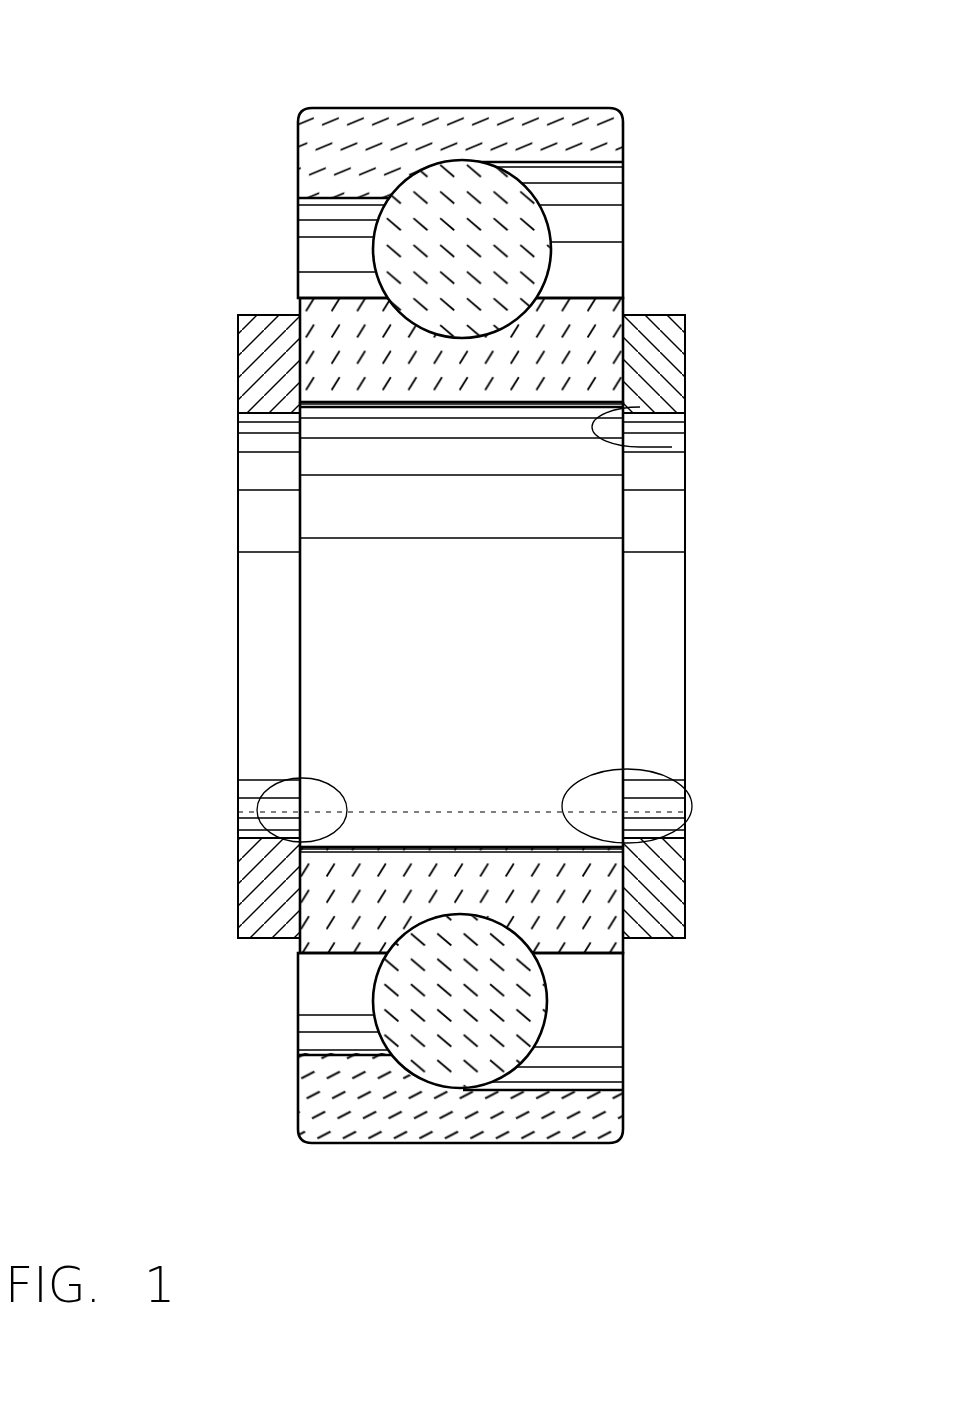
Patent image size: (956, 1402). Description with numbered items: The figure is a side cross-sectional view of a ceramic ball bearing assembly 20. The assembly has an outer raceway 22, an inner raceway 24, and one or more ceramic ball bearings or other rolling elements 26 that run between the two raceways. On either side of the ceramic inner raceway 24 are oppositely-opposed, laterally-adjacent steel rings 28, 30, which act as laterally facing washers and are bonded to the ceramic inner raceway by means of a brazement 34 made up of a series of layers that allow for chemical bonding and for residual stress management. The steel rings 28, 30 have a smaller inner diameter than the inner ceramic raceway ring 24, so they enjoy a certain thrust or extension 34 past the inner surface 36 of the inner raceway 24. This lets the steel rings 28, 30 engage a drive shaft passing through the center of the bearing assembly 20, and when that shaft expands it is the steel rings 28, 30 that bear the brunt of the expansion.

The ceramic ball bearing assembly 20 is at (706, 56).
The outer raceway 22 is at (508, 110).
The inner raceway 24 is at (583, 307).
The ceramic ball bearings 26 is at (398, 270).
The steel ring 28 is at (655, 358).
The steel ring 30 is at (258, 367).
The brazement 34 is at (665, 446).
The inner surface 36 is at (483, 402).